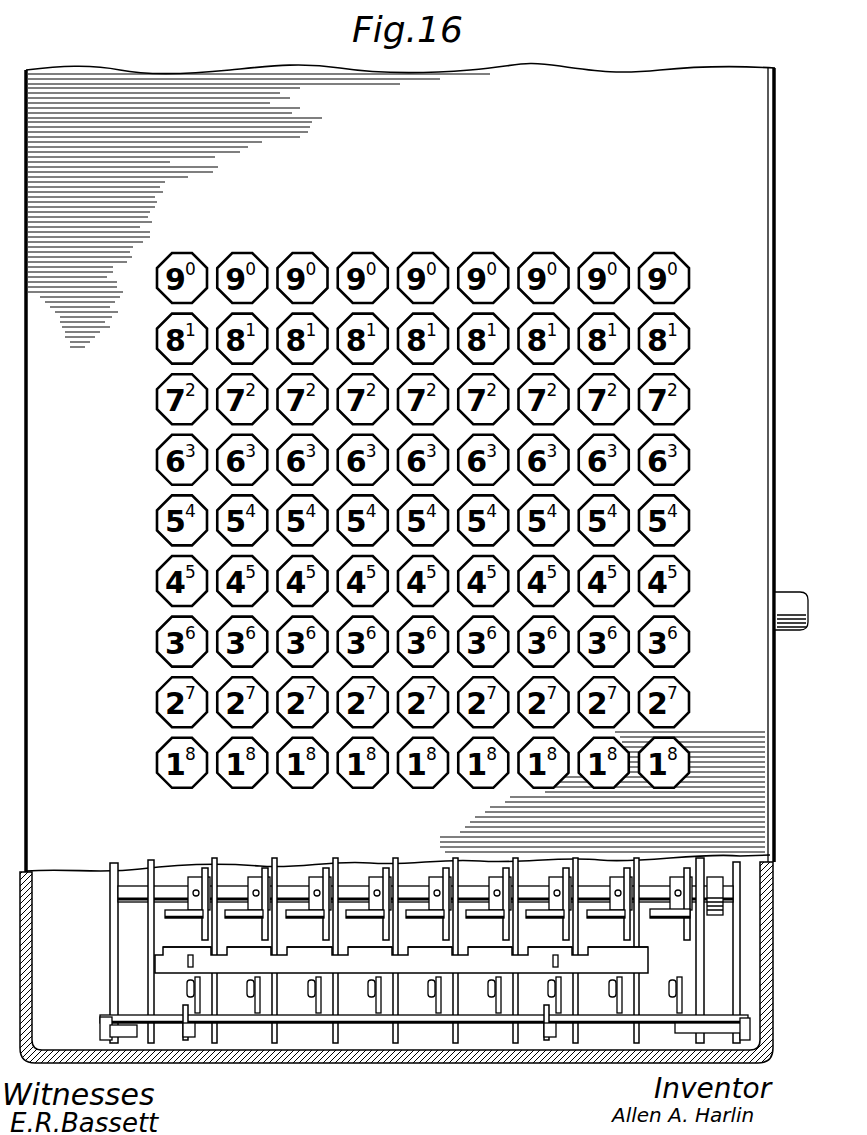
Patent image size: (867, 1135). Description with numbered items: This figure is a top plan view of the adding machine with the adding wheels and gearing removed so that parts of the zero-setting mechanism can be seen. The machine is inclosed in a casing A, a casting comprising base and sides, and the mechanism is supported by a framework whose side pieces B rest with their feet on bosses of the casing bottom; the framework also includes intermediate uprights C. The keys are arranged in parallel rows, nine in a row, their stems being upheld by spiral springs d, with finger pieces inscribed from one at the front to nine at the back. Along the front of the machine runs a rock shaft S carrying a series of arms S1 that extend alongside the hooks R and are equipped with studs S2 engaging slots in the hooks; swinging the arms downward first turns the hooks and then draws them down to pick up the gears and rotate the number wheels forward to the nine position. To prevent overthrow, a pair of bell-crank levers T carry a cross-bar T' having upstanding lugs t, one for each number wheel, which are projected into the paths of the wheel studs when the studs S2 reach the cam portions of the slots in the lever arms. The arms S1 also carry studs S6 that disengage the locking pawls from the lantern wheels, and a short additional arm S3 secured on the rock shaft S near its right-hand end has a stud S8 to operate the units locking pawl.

The spiral springs d is at (688, 656).
The casing A is at (760, 881).
The side pieces B is at (110, 938).
The rock shaft S is at (413, 885).
The arms S1 is at (452, 937).
The studs S2 is at (527, 997).
The short additional arm S3 is at (688, 904).
The studs S6 is at (358, 908).
The stud S8 is at (662, 912).
The upstanding lugs t is at (228, 952).
The cross-bar T' is at (401, 1026).
The levers T is at (432, 1047).
The hooks R is at (320, 1010).
The intermediate uprights C is at (392, 1042).